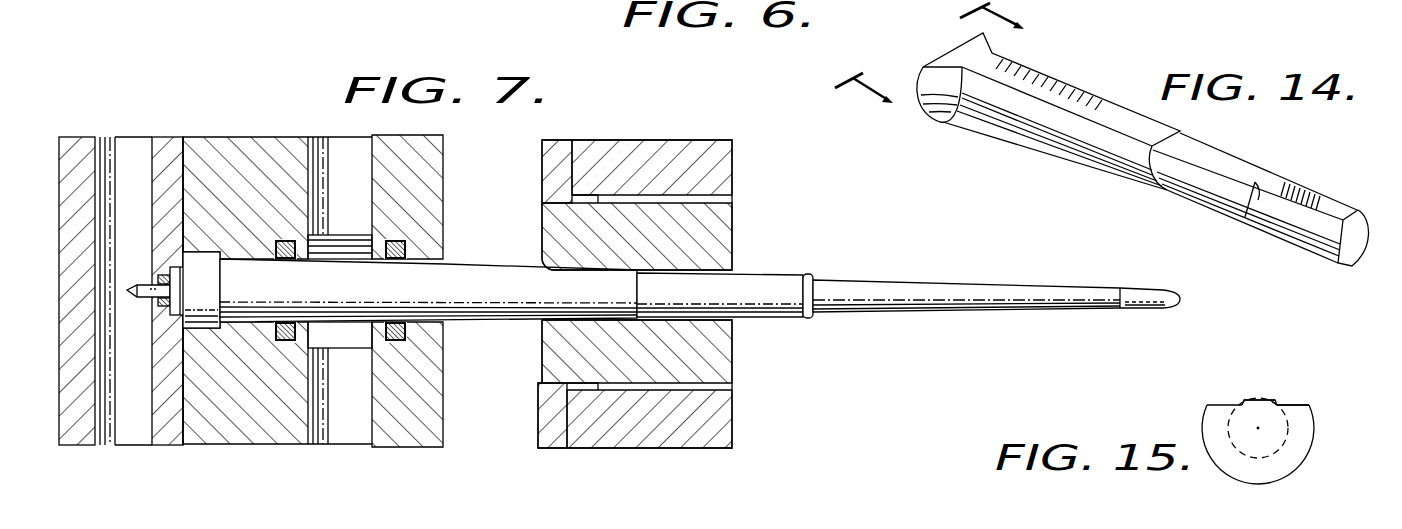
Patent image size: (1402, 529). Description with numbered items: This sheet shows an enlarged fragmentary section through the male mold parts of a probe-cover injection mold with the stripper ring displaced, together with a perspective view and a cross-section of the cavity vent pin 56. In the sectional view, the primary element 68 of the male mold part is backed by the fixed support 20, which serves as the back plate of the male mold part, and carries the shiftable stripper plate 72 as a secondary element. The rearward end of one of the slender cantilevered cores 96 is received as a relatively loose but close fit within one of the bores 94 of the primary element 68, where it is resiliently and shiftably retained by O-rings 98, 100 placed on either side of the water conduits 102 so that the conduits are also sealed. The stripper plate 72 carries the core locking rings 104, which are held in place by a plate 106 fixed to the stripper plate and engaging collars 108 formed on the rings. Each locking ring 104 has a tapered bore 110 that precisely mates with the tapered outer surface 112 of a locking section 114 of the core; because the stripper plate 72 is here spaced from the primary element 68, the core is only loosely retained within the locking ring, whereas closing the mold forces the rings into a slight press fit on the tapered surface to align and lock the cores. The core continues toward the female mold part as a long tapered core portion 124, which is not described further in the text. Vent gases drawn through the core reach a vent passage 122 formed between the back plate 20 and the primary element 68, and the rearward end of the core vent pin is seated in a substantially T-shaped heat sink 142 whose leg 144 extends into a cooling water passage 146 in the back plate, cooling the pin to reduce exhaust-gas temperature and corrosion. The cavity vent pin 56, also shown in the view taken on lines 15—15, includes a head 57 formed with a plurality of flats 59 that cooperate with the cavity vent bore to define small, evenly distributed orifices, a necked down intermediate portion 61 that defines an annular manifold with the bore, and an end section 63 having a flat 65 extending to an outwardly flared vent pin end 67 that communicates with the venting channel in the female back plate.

In FIG. 7, the fixed support 20 is at (165, 445).
In FIG. 7, the primary element 68 is at (217, 440).
In FIG. 7, the stripper plate 72 is at (668, 448).
In FIG. 7, the bores 94 is at (251, 262).
In FIG. 7, the cores 96 is at (437, 253).
In FIG. 7, the O-ring 98 is at (281, 343).
In FIG. 7, the O-ring 100 is at (393, 343).
In FIG. 7, the water conduits 102 is at (342, 437).
In FIG. 7, the core locking rings 104 is at (647, 205).
In FIG. 7, the plate 106 is at (550, 448).
In FIG. 7, the collars 108 is at (597, 190).
In FIG. 7, the tapered bore 110 is at (597, 270).
In FIG. 7, the tapered outer surface 112 is at (482, 320).
In FIG. 7, the locking section 114 is at (582, 305).
In FIG. 7, the vent passage 122 is at (183, 397).
In FIG. 7, the tapered needle 124 is at (957, 285).
In FIG. 7, the heat sink 142 is at (174, 324).
In FIG. 7, the leg 144 is at (143, 276).
In FIG. 7, the cooling water passage 146 is at (135, 143).
In FIG. 14, the section lines 15— 15 is at (937, 65).
In FIG. 14, the cavity vent pin 56 is at (1085, 176).
In FIG. 15, the cavity vent pin 56 is at (1236, 390).
In FIG. 14, the head 57 is at (1318, 192).
In FIG. 15, the head 57 is at (1277, 402).
In FIG. 14, the flats 59 is at (1262, 197).
In FIG. 15, the flats 59 is at (1253, 400).
In FIG. 14, the necked down intermediate portion 61 is at (1200, 192).
In FIG. 14, the end section 63 is at (1060, 140).
In FIG. 15, the end section 63 is at (1288, 432).
In FIG. 14, the flat 65 is at (1063, 87).
In FIG. 15, the flat 65 is at (1263, 400).
In FIG. 14, the vent pin end 67 is at (925, 112).
In FIG. 15, the vent pin end 67 is at (1279, 484).